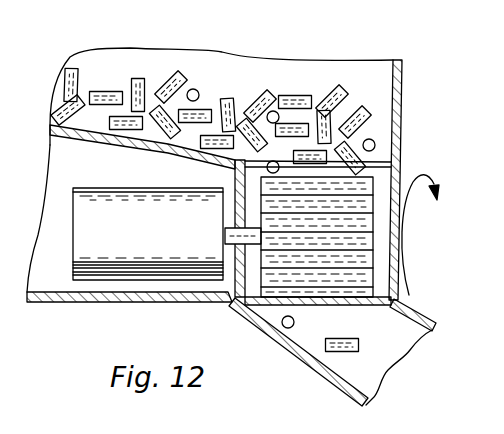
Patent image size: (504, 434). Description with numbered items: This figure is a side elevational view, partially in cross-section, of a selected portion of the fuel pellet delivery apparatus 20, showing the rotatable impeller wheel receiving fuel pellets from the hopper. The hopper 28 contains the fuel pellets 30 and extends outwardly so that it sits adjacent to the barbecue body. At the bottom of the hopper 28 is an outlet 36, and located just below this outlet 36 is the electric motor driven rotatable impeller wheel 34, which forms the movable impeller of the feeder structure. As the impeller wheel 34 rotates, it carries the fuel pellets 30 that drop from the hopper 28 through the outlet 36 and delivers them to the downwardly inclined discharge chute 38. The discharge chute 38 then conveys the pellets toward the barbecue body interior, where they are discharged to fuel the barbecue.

The apparatus 20 is at (406, 101).
The hopper 28 is at (122, 60).
The fuel pellets 30 is at (178, 80).
The rotatable impeller wheel 34 is at (276, 275).
The outlet 36 is at (396, 140).
The discharge chute 38 is at (398, 328).